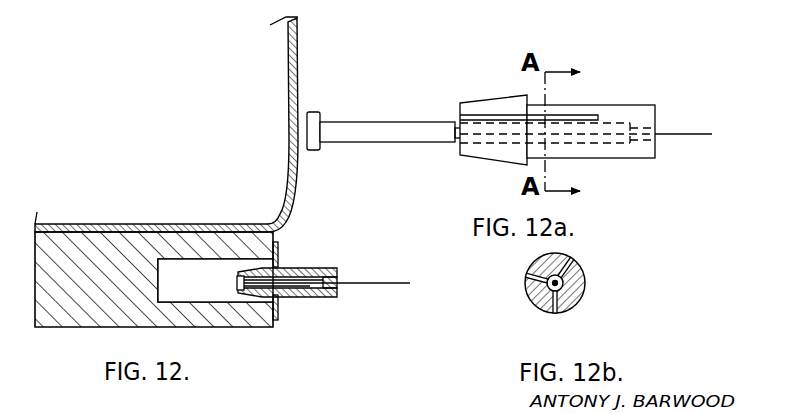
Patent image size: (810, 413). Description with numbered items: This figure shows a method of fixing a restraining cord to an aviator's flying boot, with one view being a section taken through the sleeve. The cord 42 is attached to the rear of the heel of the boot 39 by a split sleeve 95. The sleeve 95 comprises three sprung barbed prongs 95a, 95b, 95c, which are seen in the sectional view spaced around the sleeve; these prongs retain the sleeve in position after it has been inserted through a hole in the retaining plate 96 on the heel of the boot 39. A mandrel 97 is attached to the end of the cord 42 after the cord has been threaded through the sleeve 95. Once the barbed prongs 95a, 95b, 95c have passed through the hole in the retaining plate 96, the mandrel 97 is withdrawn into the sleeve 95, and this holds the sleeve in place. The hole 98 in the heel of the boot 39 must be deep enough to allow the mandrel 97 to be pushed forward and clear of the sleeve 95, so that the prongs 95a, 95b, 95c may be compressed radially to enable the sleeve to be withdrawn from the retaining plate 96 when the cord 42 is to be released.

In FIG. 12, the boot 39 is at (296, 205).
In FIG. 12, the cord 42 is at (346, 284).
In FIG. 12A, the cord 42 is at (677, 136).
In FIG. 12, the split sleeve 95 is at (330, 272).
In FIG. 12A, the split sleeve 95 is at (638, 112).
In FIG. 12B, the sprung barbed prong 95a is at (571, 262).
In FIG. 12B, the sprung barbed prong 95b is at (529, 291).
In FIG. 12B, the sprung barbed prong 95c is at (577, 301).
In FIG. 12, the retaining plate 96 is at (279, 256).
In FIG. 12, the mandrel 97 is at (386, 121).
In FIG. 12, the hole 98 is at (193, 267).